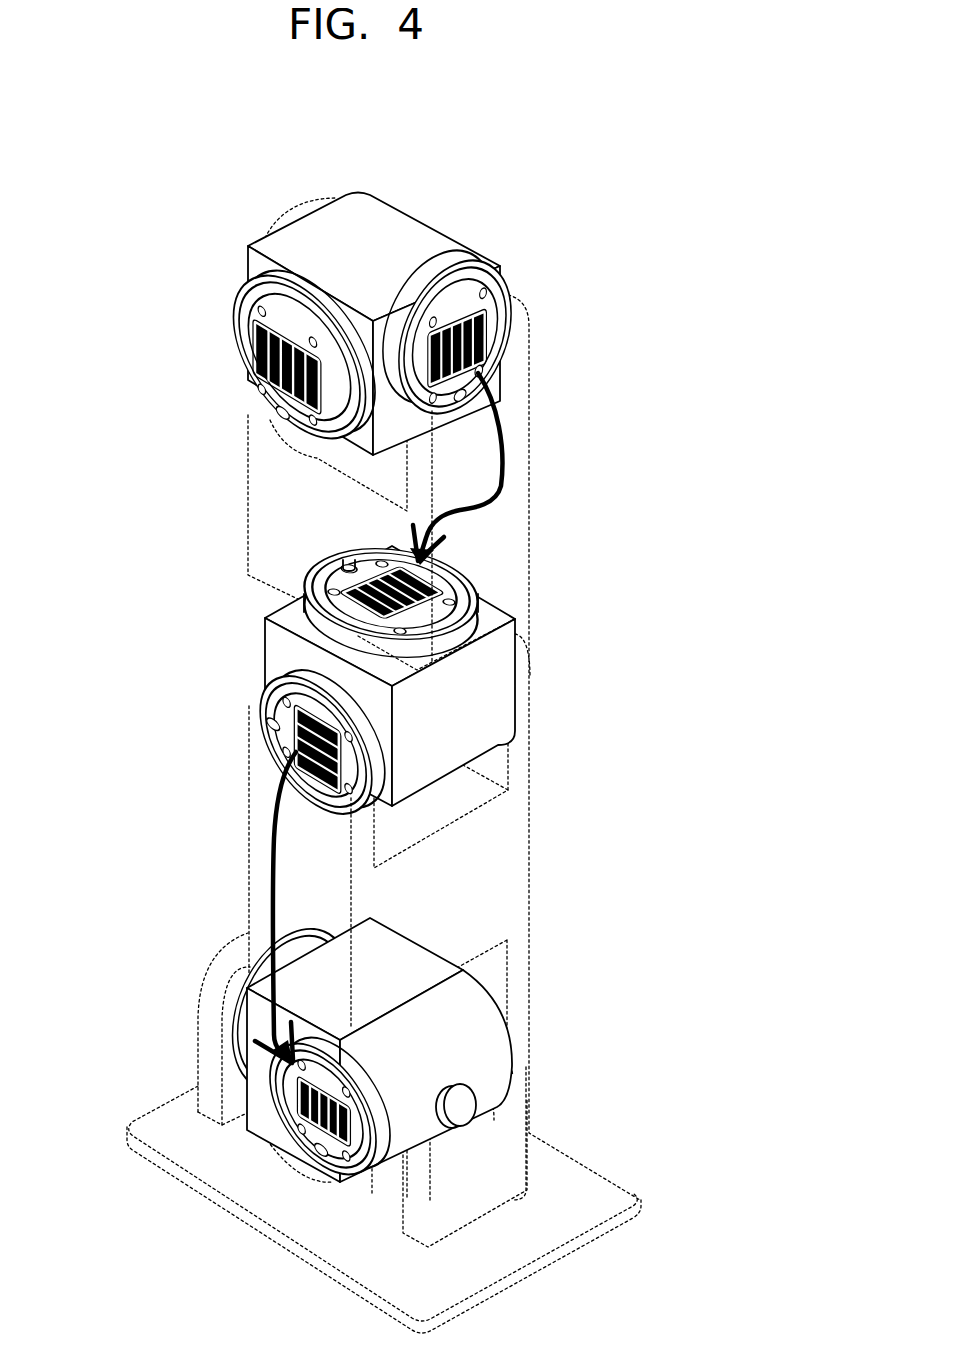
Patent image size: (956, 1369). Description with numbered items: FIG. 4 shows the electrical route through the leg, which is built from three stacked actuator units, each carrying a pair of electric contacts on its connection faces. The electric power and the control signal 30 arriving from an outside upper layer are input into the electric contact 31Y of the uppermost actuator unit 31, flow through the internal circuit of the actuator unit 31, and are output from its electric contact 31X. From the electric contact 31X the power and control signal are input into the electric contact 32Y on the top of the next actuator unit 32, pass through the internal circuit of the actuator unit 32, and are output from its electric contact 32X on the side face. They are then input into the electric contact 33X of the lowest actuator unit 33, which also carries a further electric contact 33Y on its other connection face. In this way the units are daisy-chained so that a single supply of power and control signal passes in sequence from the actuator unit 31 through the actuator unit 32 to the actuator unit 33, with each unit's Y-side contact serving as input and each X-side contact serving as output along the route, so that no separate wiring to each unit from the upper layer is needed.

The electric power and control signal 30 is at (368, 751).
The actuator unit 31 is at (365, 330).
The electric contact 31X is at (488, 330).
The electric contact 31Y is at (252, 357).
The actuator unit 32 is at (373, 682).
The electric contact 32X is at (292, 714).
The electric contact 32Y is at (437, 562).
The actuator unit 33 is at (364, 1088).
The electric contact 33X is at (290, 1122).
The electric contact 33Y is at (226, 1005).